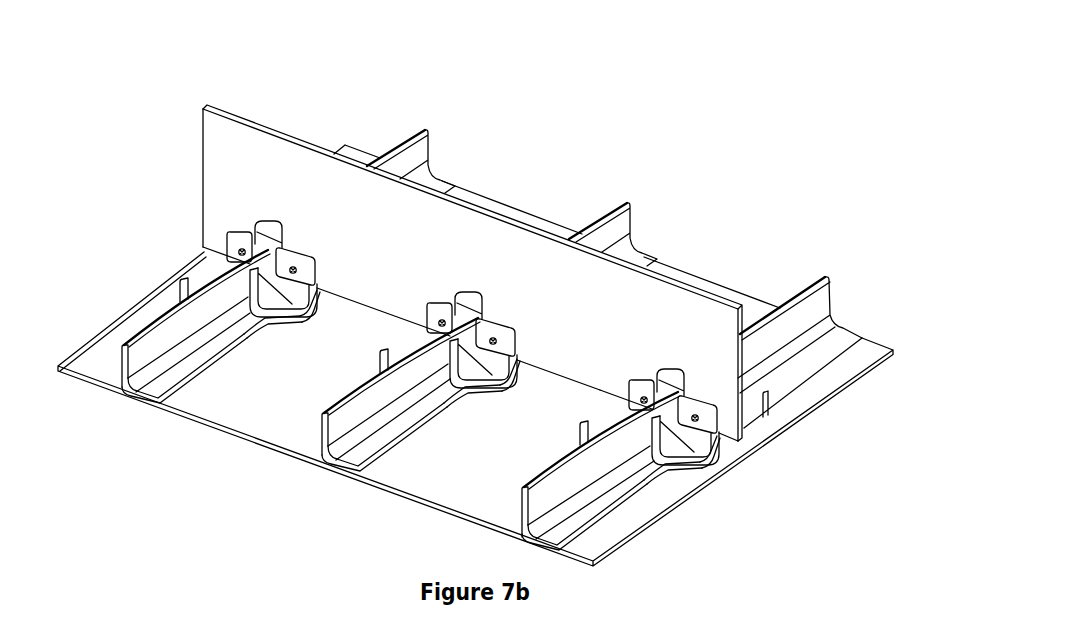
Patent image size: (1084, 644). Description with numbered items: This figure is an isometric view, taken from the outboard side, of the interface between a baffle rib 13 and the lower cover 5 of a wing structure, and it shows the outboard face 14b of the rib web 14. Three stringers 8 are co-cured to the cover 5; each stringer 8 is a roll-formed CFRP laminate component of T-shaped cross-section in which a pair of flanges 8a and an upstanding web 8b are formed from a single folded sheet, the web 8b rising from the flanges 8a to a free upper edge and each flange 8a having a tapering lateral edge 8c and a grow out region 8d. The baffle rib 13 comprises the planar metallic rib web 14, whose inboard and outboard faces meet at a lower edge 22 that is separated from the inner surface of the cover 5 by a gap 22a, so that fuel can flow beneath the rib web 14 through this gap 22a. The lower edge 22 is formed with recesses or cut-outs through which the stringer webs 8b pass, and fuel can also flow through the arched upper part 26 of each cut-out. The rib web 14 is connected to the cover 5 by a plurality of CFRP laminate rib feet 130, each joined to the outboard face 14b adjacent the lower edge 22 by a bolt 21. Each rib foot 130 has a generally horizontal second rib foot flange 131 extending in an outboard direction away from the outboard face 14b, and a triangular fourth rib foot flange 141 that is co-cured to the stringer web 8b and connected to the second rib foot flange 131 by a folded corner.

The lower cover 5 is at (230, 400).
The stringer 8 is at (522, 322).
The stringer flange 8a is at (365, 466).
The stringer web 8b is at (336, 407).
The tapering lateral edge 8c is at (457, 407).
The grow out region 8d is at (497, 400).
The baffle rib 13 is at (516, 194).
The rib web 14 is at (440, 235).
The outboard face 14b is at (230, 128).
The bolt 21 is at (698, 419).
The lower edge 22 is at (380, 313).
The gap 22a is at (566, 399).
The arched upper part 26 is at (258, 226).
The rib foot 130 is at (682, 477).
The second rib foot flange 131 is at (688, 450).
The fourth rib foot flange 141 is at (460, 361).